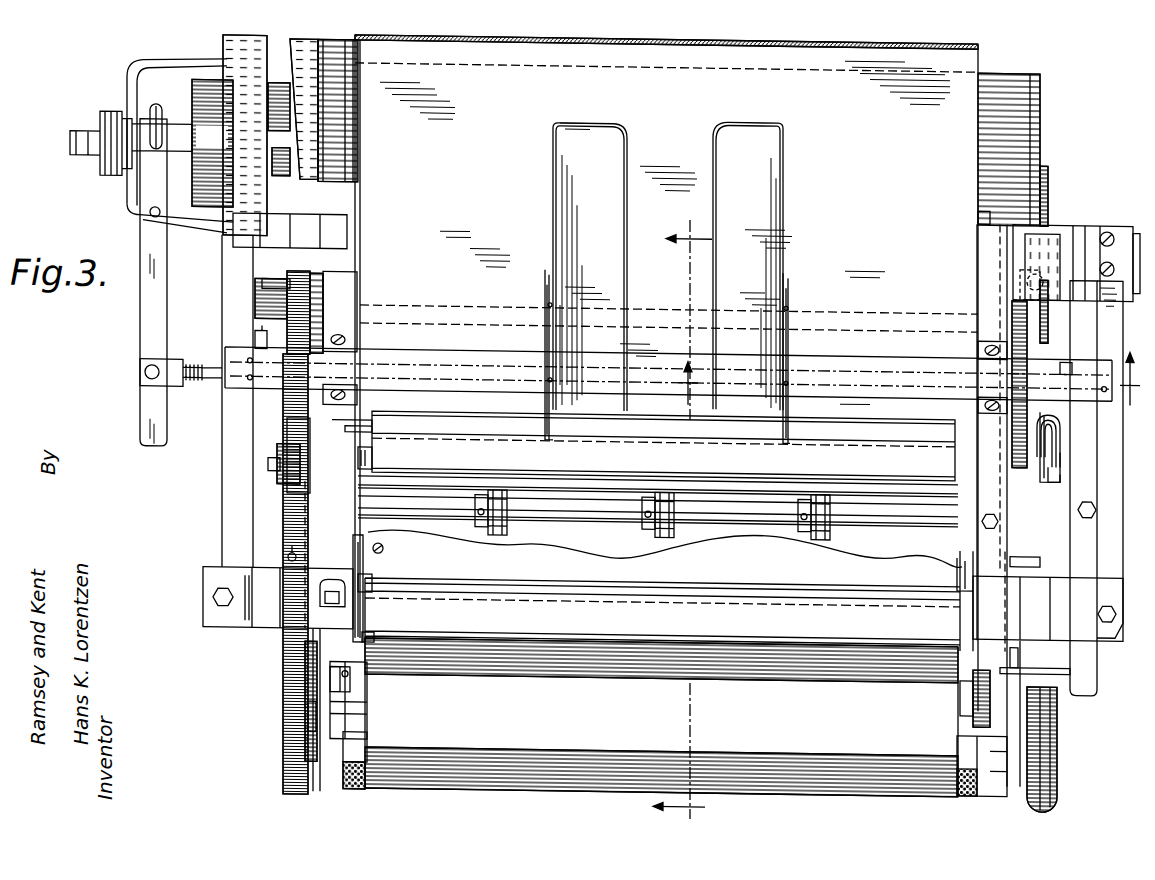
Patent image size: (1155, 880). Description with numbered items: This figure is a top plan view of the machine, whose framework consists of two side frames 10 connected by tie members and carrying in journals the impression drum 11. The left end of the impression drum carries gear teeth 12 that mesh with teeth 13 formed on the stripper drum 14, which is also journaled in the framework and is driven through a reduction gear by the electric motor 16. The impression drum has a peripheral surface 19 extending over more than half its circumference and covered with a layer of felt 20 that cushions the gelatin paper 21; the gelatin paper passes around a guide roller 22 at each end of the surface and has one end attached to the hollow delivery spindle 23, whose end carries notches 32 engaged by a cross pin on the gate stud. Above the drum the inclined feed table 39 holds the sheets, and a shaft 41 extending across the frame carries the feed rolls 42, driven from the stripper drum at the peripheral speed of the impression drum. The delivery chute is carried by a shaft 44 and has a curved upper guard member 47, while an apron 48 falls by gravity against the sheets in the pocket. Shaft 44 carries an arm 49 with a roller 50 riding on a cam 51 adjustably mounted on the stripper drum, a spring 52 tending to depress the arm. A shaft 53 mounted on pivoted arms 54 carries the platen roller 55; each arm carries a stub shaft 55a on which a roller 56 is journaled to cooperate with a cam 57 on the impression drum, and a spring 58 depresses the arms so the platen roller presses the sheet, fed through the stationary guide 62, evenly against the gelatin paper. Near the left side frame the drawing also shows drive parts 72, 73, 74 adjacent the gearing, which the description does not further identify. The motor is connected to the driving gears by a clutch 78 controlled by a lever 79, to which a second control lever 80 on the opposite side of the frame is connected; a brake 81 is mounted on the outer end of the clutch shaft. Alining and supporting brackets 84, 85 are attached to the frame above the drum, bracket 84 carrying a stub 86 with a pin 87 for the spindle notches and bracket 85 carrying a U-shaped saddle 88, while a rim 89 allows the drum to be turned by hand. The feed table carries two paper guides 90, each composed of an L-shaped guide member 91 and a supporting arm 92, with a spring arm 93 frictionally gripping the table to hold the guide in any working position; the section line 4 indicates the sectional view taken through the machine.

The section line 4- 4 is at (683, 517).
The side frames 10 is at (222, 480).
The impression drum 11 is at (661, 730).
The gear teeth 12 is at (288, 750).
The teeth 13 is at (305, 190).
The stripper drum 14 is at (1016, 106).
The electric motor 16 is at (338, 100).
The peripheral surface 19 is at (288, 779).
The layer of felt 20 is at (346, 785).
The gelatin paper 21 is at (500, 788).
The guide roller 22 is at (352, 733).
The hollow delivery spindle 23 is at (362, 692).
The notches 32 is at (292, 720).
The inclined feed table 39 is at (666, 373).
The shaft 41 is at (548, 484).
The feed rolls 42 is at (494, 526).
The shaft 44 is at (373, 468).
The curved upper guard member 47 is at (712, 480).
The apron 48 is at (663, 446).
The arm 49 is at (1012, 285).
The roller 50 is at (1036, 250).
The cam 51 is at (1048, 180).
The spring 52 is at (1040, 450).
The shaft 53 is at (362, 621).
The pivoted arms 54 is at (374, 636).
The platen roller 55 is at (662, 614).
The stub shaft 55a is at (365, 580).
The roller 56 is at (340, 595).
The cam 57 is at (340, 717).
The spring 58 is at (290, 558).
The stationary guide 62 is at (770, 546).
The gear 72 is at (278, 333).
The gear 73 is at (262, 327).
The link 74 is at (272, 284).
The clutch 78 is at (212, 143).
The lever 79 is at (148, 341).
The second control lever 80 is at (1085, 690).
The brake 81 is at (112, 118).
The alining and supporting bracket 84 is at (296, 655).
The alining and supporting bracket 85 is at (1002, 662).
The stub 86 is at (346, 678).
The pin 87 is at (330, 683).
The U-shaped saddle 88 is at (976, 690).
The rim 89 is at (1058, 746).
The paper guides 90 is at (668, 266).
The L-shaped guide member 91 is at (553, 245).
The supporting arm 92 is at (445, 366).
The spring arm 93 is at (250, 348).